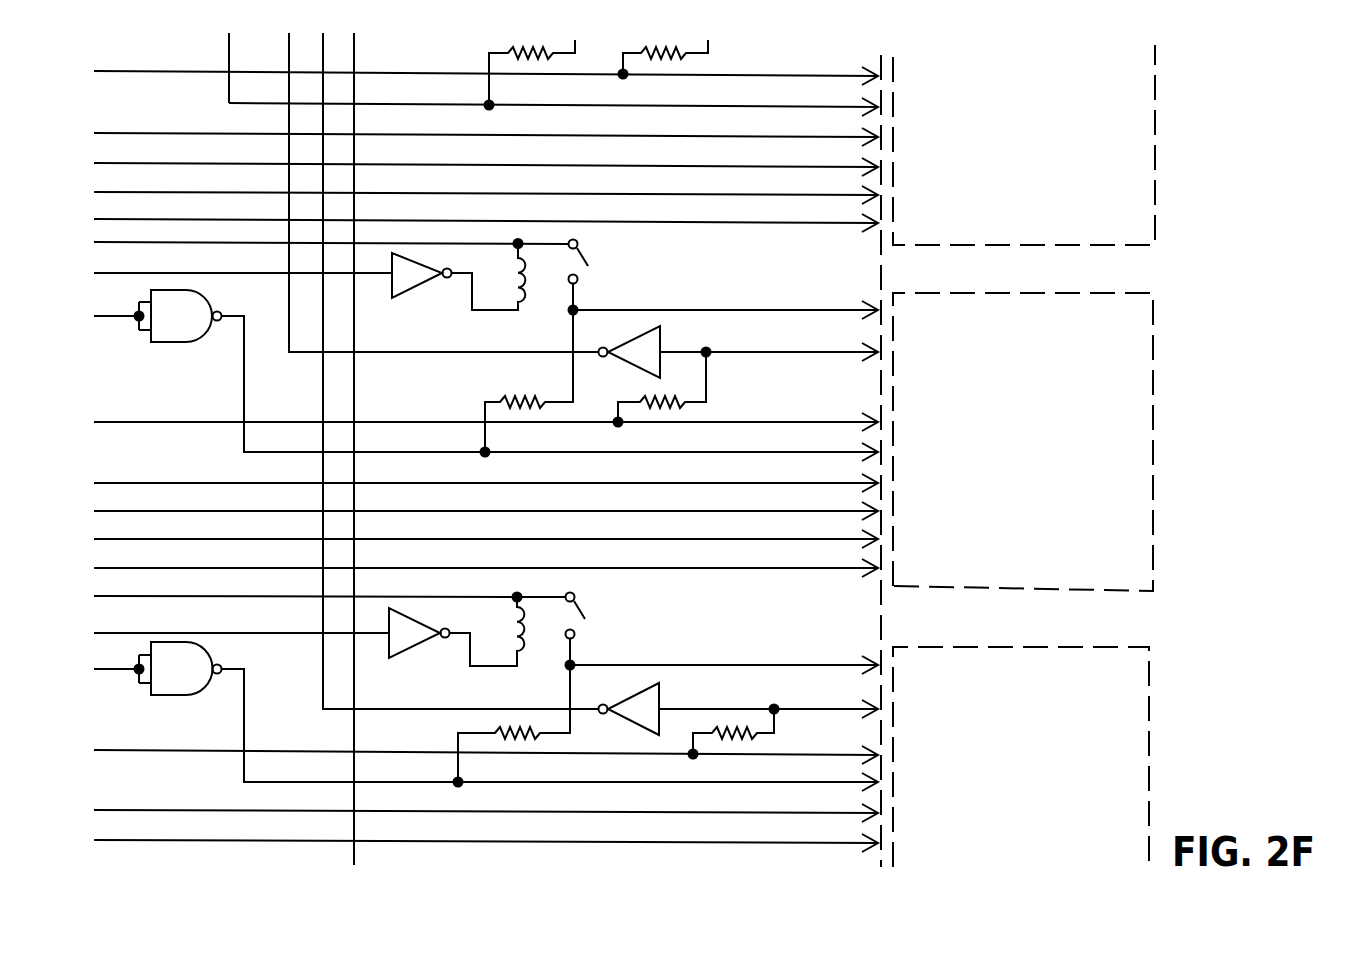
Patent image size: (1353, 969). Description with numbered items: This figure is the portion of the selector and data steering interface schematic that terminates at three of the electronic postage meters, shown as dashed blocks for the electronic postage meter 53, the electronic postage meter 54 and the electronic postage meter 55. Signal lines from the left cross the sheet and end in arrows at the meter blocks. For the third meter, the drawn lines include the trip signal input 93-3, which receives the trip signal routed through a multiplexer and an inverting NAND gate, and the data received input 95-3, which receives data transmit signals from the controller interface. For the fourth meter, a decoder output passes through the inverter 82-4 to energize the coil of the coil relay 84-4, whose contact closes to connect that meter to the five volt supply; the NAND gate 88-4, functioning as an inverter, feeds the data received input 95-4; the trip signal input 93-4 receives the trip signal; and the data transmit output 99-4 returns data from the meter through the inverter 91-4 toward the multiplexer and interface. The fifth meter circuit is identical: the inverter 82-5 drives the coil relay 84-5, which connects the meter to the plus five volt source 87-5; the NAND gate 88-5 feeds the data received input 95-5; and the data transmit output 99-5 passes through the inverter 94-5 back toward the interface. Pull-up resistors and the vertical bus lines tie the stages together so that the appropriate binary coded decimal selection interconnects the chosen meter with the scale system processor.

The electronic postage meter 53 is at (1156, 140).
The electronic postage meter 54 is at (1153, 362).
The electronic postage meter 55 is at (1149, 700).
The inverter 82-4 is at (418, 293).
The inverter 82-5 is at (422, 651).
The coil relay 84-4 is at (590, 268).
The coil relay 84-5 is at (589, 616).
The NAND gate 88-4 is at (198, 343).
The NAND gate 88-5 is at (208, 648).
The inverter 91-4 is at (632, 340).
The inverter 94-5 is at (633, 698).
The trip signal input 93-3 is at (840, 221).
The trip signal input 93-4 is at (843, 539).
The data received input 95-3 is at (857, 106).
The data received input 95-4 is at (860, 453).
The data received input 95-5 is at (855, 783).
The data transmit output 99-4 is at (862, 352).
The data transmit output 99-5 is at (862, 709).
The plus 5 volt source 87-5 is at (856, 665).